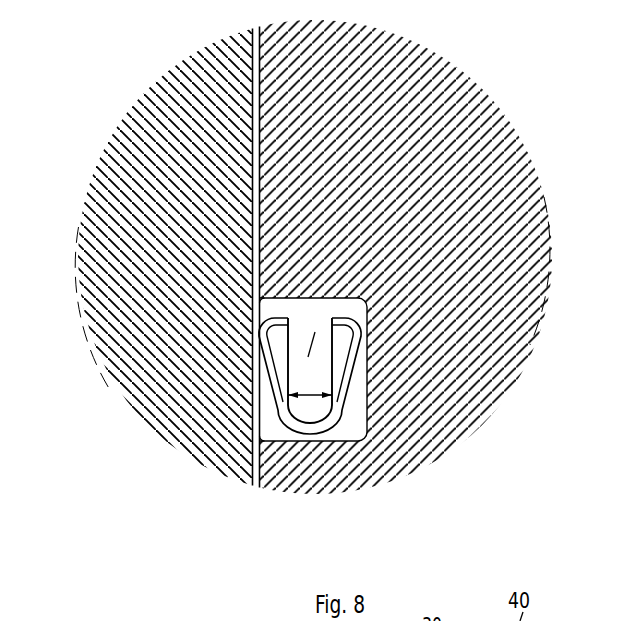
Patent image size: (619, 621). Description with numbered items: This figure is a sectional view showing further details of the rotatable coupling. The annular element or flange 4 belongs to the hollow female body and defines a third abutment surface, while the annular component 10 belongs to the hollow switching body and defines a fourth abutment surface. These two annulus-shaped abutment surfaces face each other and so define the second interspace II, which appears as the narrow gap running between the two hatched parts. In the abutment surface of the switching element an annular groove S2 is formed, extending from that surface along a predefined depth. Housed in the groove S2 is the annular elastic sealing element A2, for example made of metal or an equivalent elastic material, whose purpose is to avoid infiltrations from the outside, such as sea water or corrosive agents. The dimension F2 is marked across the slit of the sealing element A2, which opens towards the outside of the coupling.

The annular component 10 is at (112, 180).
The annular element or flange 4 is at (503, 280).
The second interspace II is at (257, 297).
The groove S2 is at (358, 407).
The sealing element A2 is at (353, 382).
The gap width dimension F2 is at (310, 365).